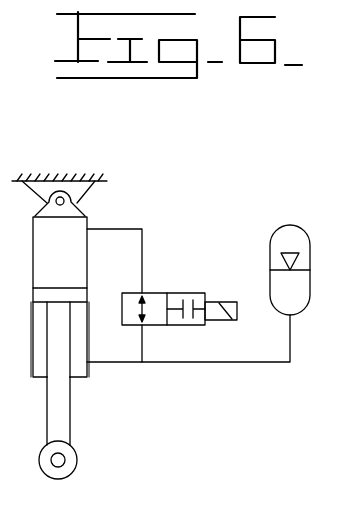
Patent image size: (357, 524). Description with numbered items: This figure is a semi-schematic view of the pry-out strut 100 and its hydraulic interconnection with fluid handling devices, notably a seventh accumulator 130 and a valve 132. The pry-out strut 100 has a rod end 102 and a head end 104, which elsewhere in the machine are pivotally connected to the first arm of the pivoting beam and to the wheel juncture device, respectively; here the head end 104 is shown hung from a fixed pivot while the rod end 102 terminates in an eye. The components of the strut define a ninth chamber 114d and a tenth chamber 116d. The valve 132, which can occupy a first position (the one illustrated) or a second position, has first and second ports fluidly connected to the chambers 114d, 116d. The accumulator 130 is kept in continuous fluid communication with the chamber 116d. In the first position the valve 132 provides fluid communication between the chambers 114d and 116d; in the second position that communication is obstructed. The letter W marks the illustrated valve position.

The pry-out strut 100 is at (92, 330).
The rod end 102 is at (58, 413).
The head end 104 is at (80, 297).
The ninth chamber 114d is at (72, 257).
The tenth chamber 116d is at (75, 349).
The seventh accumulator 130 is at (271, 242).
The valve 132 is at (168, 292).
The working position of valve W is at (122, 309).